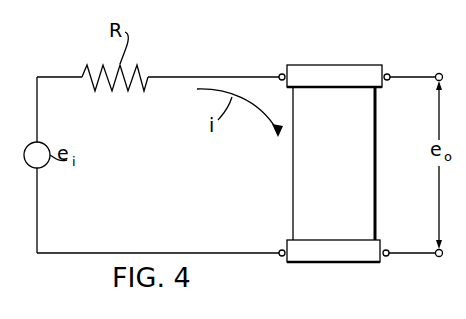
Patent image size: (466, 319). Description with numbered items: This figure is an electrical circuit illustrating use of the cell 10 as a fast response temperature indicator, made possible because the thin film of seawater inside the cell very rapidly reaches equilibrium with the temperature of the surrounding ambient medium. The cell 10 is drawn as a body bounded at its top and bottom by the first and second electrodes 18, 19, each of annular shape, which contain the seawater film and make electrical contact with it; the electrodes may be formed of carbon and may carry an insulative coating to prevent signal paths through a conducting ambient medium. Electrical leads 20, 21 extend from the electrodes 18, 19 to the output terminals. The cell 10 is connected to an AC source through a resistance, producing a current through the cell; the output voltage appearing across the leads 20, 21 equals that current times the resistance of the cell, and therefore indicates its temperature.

The cell 10 is at (376, 177).
The first electrode 18 is at (337, 65).
The second electrode 19 is at (346, 256).
The electrical lead 20 is at (410, 75).
The electrical lead 21 is at (411, 251).